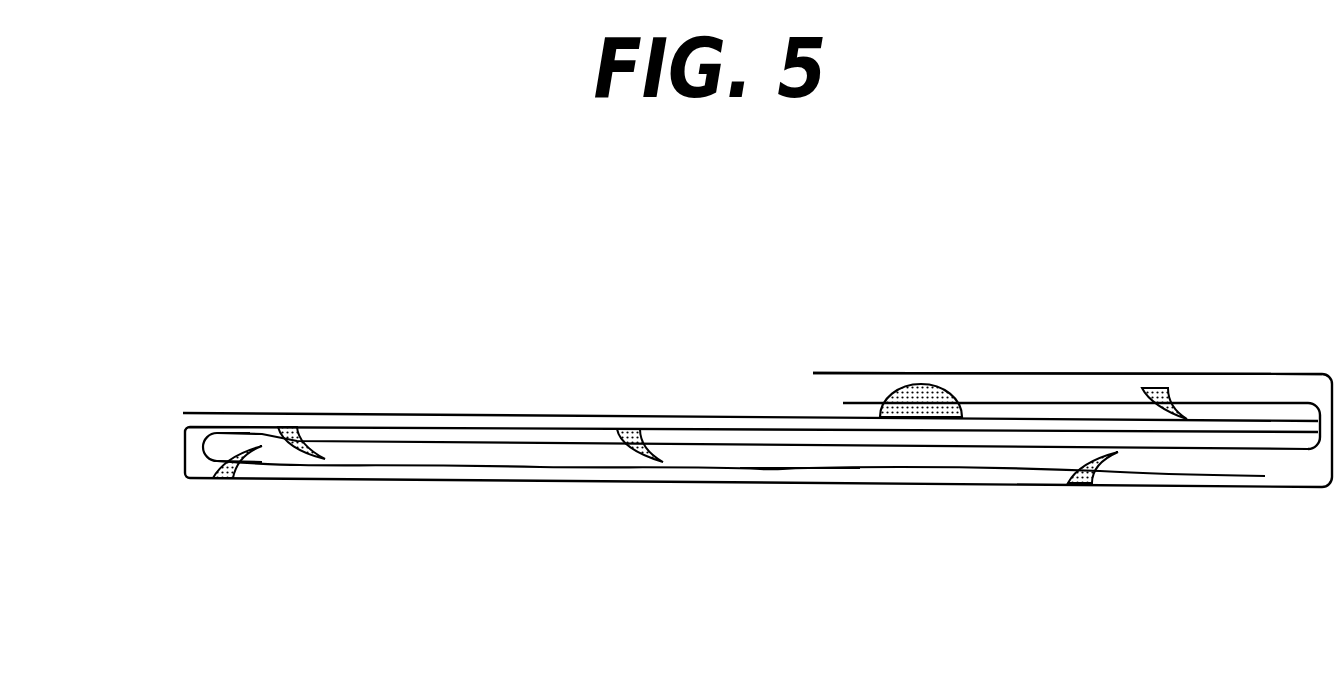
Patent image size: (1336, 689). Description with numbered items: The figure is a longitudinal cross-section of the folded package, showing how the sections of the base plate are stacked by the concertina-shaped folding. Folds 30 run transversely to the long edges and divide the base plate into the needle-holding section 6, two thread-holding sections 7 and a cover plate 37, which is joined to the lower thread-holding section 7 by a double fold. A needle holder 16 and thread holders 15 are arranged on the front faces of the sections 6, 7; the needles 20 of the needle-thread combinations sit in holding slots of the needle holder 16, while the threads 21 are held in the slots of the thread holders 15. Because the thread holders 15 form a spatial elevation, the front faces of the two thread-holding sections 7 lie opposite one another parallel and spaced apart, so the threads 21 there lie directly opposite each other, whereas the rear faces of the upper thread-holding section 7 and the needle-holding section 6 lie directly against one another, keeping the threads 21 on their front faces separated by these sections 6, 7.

The needle-holding section 6 is at (378, 412).
The thread-holding section 7 is at (479, 426).
The thread holder 15 is at (235, 450).
The needle holder 16 is at (925, 384).
The needle 20 is at (880, 403).
The thread 21 is at (822, 447).
The fold 30 is at (185, 451).
The cover plate 37 is at (1143, 374).